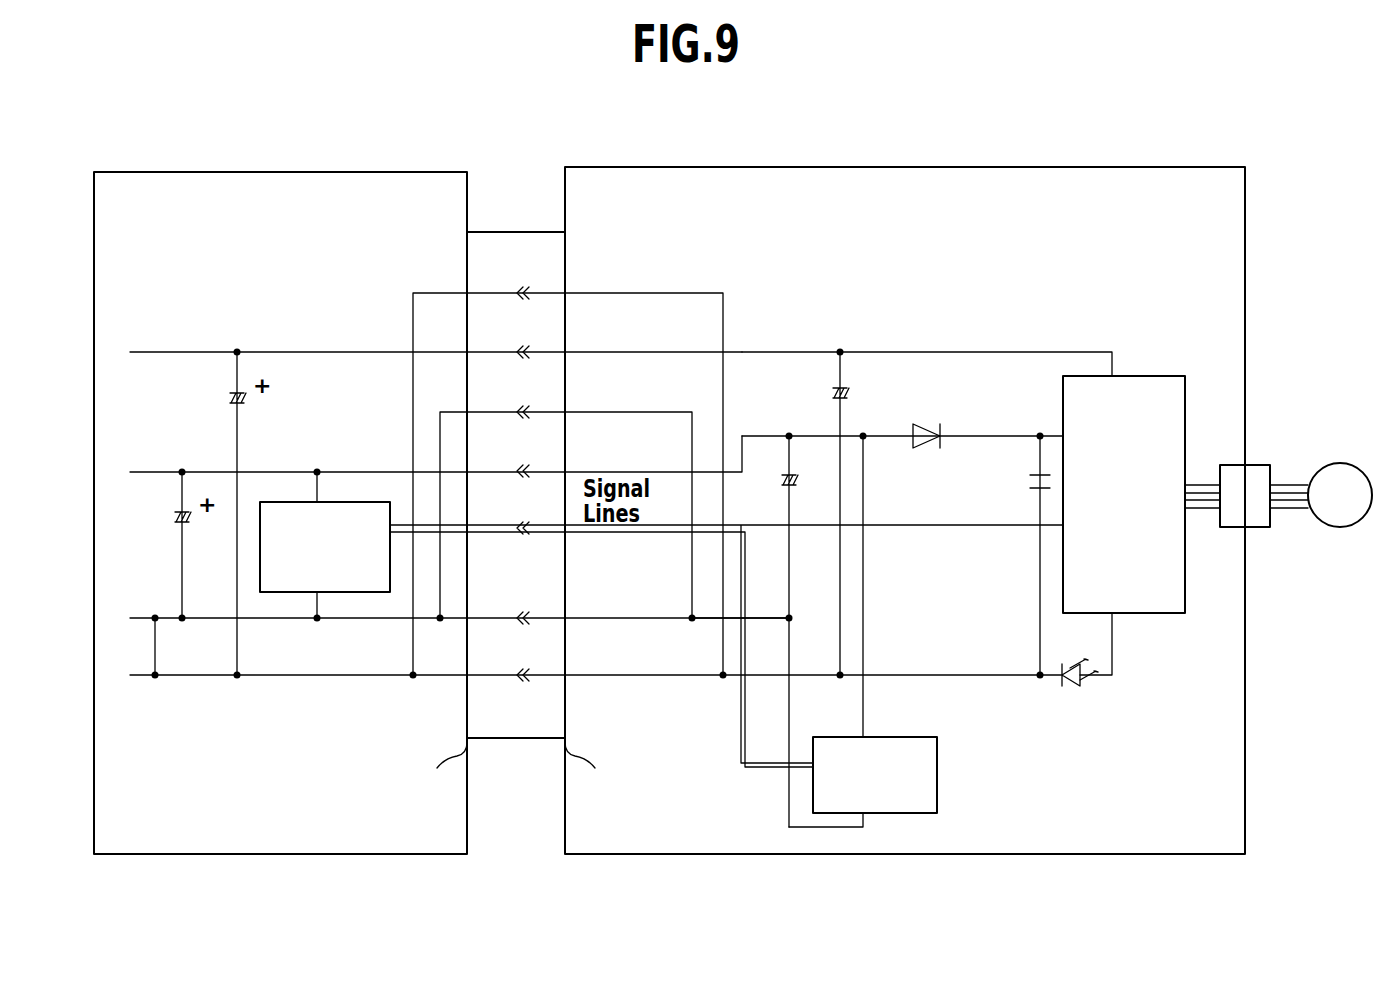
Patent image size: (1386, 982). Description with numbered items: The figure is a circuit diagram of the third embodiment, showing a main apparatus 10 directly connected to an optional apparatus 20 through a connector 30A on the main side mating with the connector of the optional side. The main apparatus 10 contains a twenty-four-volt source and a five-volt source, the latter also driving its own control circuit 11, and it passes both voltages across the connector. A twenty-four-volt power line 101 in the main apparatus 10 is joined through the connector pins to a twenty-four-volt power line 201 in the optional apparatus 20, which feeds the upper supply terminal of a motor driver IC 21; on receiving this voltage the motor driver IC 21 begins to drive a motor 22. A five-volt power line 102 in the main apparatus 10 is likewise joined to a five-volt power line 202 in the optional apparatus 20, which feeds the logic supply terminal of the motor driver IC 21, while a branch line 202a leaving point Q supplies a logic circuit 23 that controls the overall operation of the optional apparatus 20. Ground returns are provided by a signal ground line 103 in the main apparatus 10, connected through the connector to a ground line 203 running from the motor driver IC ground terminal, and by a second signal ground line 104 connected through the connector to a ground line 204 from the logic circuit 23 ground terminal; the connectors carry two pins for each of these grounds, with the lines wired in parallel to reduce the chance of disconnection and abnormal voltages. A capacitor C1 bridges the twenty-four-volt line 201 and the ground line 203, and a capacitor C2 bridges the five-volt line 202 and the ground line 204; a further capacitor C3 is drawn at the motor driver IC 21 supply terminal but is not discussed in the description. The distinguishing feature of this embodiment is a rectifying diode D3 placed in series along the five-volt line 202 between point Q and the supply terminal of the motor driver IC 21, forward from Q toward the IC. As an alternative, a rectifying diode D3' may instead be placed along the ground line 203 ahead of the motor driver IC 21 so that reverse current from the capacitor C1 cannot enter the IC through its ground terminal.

The main apparatus 10 is at (280, 495).
The optional apparatus 20 is at (905, 493).
The control circuit 11 is at (325, 545).
The motor driver IC 21 is at (1124, 494).
The motor 22 is at (1281, 465).
The logic circuit 23 is at (914, 789).
The connector 30A is at (518, 519).
The +24 V power line 101 is at (353, 352).
The +5 V power line 102 is at (353, 472).
The SG2 line 103 is at (283, 677).
The SG1 line 104 is at (360, 620).
The +24 V power line 201 is at (907, 352).
The +5 V power line 202 is at (953, 436).
The +5 V power line 202a is at (865, 570).
The SG2 line 203 is at (978, 675).
The SG1 line 204 is at (650, 620).
The capacitor C1 is at (834, 515).
The capacitor C2 is at (788, 631).
The capacitor C3 is at (1026, 557).
The rectifying diode D3 is at (920, 421).
The rectifying diode D3' is at (1085, 691).